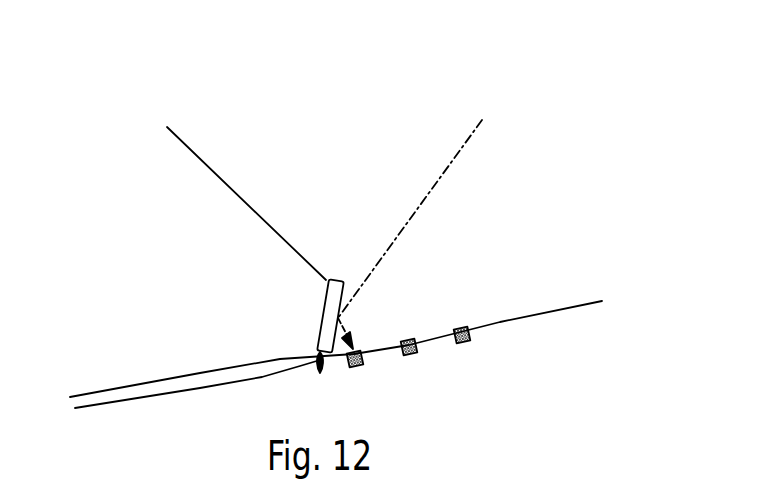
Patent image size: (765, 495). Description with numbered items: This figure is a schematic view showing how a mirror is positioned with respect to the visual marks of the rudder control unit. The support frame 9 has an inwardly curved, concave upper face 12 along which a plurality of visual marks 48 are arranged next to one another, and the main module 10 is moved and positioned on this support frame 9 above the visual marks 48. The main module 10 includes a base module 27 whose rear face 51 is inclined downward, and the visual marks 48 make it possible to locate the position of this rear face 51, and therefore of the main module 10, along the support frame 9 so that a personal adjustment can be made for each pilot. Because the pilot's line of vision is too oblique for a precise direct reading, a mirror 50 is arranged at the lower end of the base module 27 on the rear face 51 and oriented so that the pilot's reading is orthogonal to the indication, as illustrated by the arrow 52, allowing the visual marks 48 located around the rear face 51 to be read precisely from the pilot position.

The support frame 9 is at (535, 317).
The main module 10 is at (246, 157).
The upper face 12 is at (336, 321).
The base module 27 is at (238, 195).
The visual marks 48 is at (358, 366).
The mirror 50 is at (325, 312).
The rear face 51 is at (320, 373).
The arrow 52 is at (418, 208).